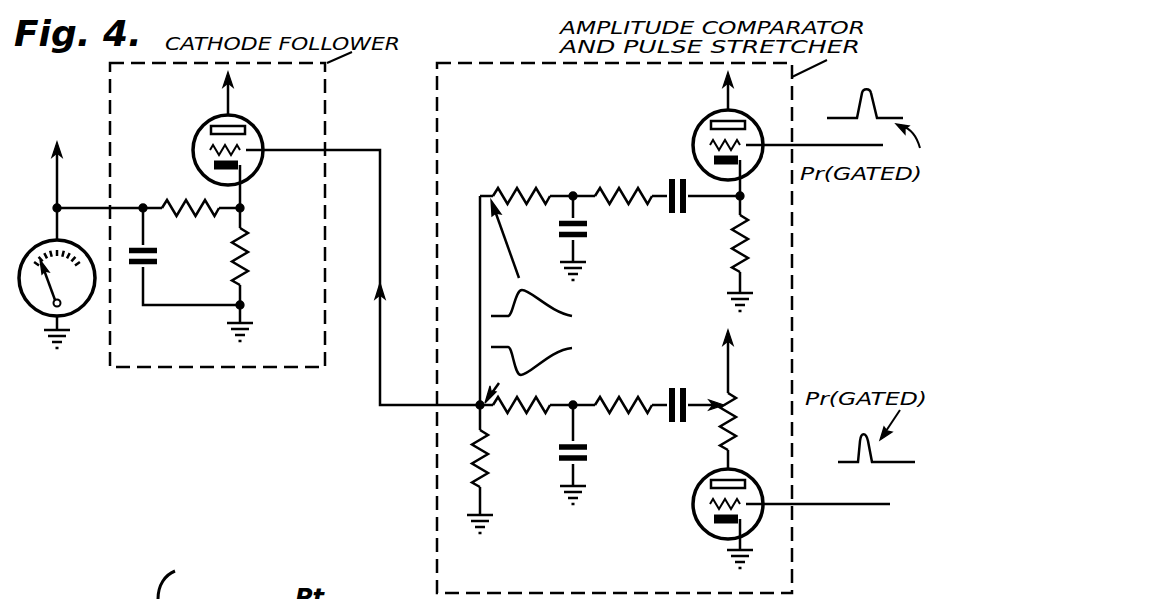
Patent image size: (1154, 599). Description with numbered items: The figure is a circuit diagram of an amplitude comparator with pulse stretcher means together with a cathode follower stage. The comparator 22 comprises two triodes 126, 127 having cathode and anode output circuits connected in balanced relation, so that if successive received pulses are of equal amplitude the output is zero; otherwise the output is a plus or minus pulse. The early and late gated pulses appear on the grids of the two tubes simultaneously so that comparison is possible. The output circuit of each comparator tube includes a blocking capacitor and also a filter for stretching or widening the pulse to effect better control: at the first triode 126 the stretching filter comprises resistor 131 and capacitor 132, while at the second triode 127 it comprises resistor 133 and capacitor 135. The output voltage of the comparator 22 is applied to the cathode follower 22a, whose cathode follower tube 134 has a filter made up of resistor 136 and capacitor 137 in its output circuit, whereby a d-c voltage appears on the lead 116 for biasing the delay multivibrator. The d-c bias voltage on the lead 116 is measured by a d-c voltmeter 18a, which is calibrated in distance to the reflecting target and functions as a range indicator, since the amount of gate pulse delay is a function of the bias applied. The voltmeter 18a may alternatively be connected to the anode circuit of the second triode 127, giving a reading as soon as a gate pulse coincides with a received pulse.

The lead 116 is at (54, 189).
The d-c voltmeter 18a is at (31, 311).
The cathode follower 22a is at (327, 118).
The cathode follower tube 134 is at (197, 135).
The resistor of filter 136 is at (189, 198).
The capacitor of filter 137 is at (157, 251).
The amplitude comparator 22 is at (466, 62).
The resistor 131 is at (626, 164).
The capacitor 132 is at (588, 224).
The triode 126 is at (692, 139).
The resistor 133 is at (658, 378).
The capacitor 135 is at (603, 441).
The triode 127 is at (694, 503).